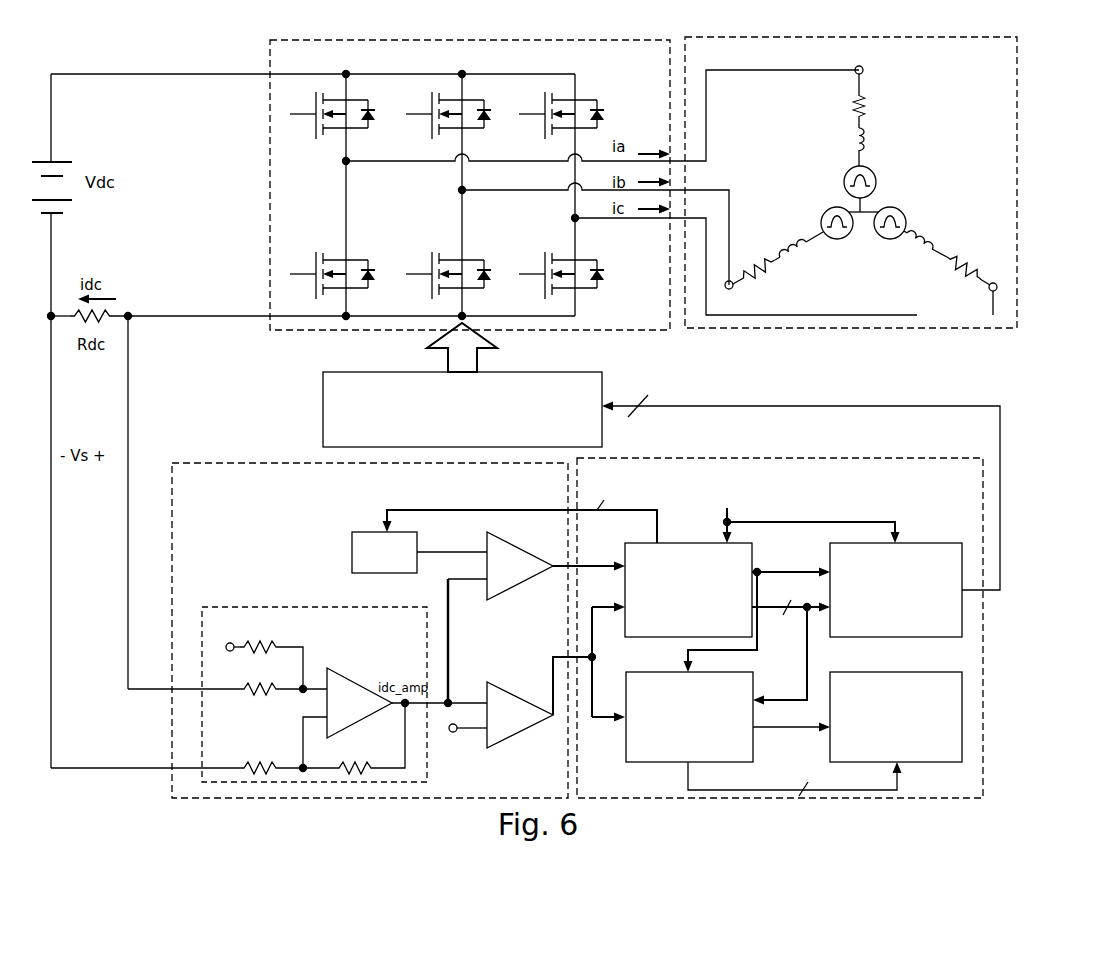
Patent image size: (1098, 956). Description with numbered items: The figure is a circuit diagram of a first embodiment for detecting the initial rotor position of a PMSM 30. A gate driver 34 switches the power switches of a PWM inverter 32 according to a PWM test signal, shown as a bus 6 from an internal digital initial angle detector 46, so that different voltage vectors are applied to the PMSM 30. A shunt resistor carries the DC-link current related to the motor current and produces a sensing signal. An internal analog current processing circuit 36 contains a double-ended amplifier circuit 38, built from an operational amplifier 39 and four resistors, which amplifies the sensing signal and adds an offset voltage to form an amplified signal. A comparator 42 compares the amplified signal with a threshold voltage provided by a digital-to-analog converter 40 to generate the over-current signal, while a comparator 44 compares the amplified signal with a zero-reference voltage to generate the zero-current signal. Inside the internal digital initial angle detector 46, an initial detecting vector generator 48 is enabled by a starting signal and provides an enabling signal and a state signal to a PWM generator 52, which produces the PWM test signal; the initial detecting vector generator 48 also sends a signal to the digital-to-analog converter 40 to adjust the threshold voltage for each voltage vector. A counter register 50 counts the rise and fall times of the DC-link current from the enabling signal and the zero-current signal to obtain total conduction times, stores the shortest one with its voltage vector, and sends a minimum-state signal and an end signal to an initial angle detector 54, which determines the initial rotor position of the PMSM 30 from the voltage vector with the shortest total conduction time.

The PWM test signal bus 6 is at (629, 391).
The PMSM 30 is at (1017, 173).
The PWM inverter 32 is at (270, 177).
The gate driver 34 is at (357, 372).
The internal analog current processing circuit 36 is at (172, 568).
The double-ended amplifier circuit 38 is at (308, 672).
The operational amplifier 39 is at (357, 685).
The digital-to-analog converter 40 is at (362, 532).
The comparator 42 is at (510, 546).
The comparator 44 is at (510, 690).
The internal digital initial angle detector 46 is at (927, 457).
The initial detecting vector generator 48 is at (745, 547).
The counter register 50 is at (663, 763).
The PWM generator 52 is at (917, 543).
The initial angle detector 54 is at (962, 710).